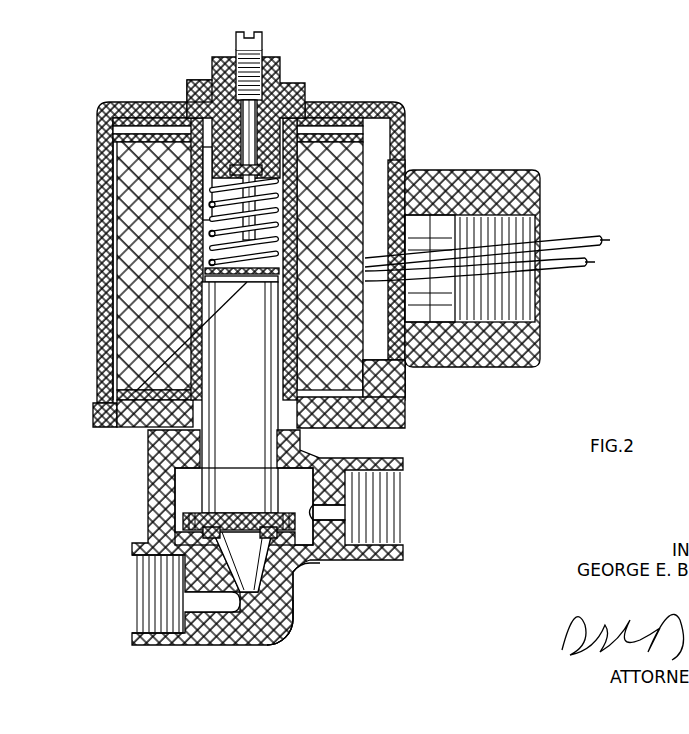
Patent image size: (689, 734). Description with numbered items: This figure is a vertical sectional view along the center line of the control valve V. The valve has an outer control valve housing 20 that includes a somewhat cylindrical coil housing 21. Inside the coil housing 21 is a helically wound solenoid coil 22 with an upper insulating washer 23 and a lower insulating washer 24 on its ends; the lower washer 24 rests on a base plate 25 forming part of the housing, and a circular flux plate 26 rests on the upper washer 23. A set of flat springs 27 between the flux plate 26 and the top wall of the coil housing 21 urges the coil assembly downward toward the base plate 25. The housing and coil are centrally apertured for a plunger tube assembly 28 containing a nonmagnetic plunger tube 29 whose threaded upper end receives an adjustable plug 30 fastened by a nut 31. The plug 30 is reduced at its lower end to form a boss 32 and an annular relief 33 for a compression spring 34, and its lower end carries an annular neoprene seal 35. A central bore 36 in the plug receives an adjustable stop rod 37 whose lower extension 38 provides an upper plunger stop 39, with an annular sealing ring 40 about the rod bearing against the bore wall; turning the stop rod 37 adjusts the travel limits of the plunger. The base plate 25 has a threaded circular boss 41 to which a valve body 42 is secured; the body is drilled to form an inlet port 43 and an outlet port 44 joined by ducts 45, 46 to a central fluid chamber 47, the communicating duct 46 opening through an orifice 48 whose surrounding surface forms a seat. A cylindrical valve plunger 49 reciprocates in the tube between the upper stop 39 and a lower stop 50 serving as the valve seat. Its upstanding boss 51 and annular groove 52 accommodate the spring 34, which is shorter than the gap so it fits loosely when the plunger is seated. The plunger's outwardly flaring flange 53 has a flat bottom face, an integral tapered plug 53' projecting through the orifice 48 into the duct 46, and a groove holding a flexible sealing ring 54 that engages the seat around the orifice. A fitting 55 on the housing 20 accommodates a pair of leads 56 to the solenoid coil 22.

The outer control valve housing 20 is at (402, 128).
The coil housing 21 is at (107, 102).
The solenoid coil 22 is at (130, 351).
The upper insulating washer 23 is at (140, 147).
The lower insulating washer 24 is at (132, 392).
The base plate 25 is at (93, 414).
The flux plate 26 is at (124, 130).
The flat springs 27 is at (118, 120).
The plunger tube assembly 28 is at (200, 303).
The plunger tube 29 is at (193, 330).
The plug 30 is at (286, 72).
The nut 31 is at (193, 88).
The boss 32 is at (205, 185).
The annular relief 33 is at (208, 203).
The compression spring 34 is at (214, 237).
The annular neoprene seal 35 is at (208, 170).
The central bore 36 is at (212, 218).
The adjustable stop rod 37 is at (263, 46).
The lower extension 38 is at (212, 256).
The upper plunger stop 39 is at (209, 271).
The annular sealing ring 40 is at (205, 193).
The externally threaded circular boss 41 is at (150, 447).
The valve body 42 is at (150, 473).
The inlet port 43 is at (404, 513).
The outlet port 44 is at (176, 601).
The duct 45 is at (322, 518).
The communicating duct 46 is at (213, 603).
The central fluid chamber 47 is at (183, 490).
The orifice 48 is at (297, 603).
The valve plunger 49 is at (397, 368).
The lower stop 50 is at (185, 534).
The upstanding boss 51 is at (205, 284).
The annular groove 52 is at (97, 421).
The outwardly flaring flange 53 is at (183, 523).
The tapered plug 53' is at (291, 630).
The flexible sealing ring 54 is at (303, 567).
The fitting 55 is at (478, 172).
The leads 56 is at (553, 256).
The control valve V is at (434, 121).